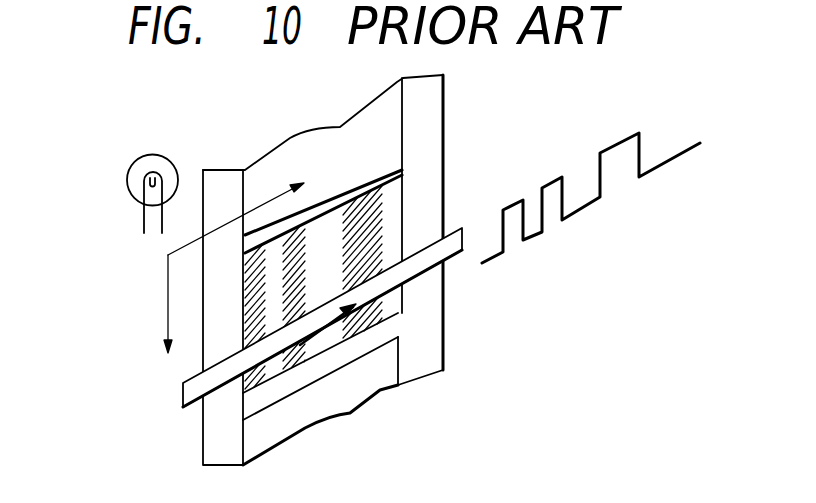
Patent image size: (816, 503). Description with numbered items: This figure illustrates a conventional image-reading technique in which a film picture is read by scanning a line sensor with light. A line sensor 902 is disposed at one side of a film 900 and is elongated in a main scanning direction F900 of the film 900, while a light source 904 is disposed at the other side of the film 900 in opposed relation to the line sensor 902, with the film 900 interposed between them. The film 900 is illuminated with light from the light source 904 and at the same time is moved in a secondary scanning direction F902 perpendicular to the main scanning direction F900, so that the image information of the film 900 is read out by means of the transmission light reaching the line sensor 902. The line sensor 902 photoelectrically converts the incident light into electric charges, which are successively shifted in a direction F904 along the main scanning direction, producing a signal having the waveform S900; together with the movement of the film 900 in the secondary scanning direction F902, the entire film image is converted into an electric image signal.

The film 900 is at (385, 375).
The line sensor 902 is at (336, 330).
The light source 904 is at (133, 182).
The main scanning direction F900 is at (255, 199).
The secondary scanning direction F902 is at (150, 321).
The charge shifting direction F904 is at (318, 322).
The signal waveform S900 is at (556, 177).